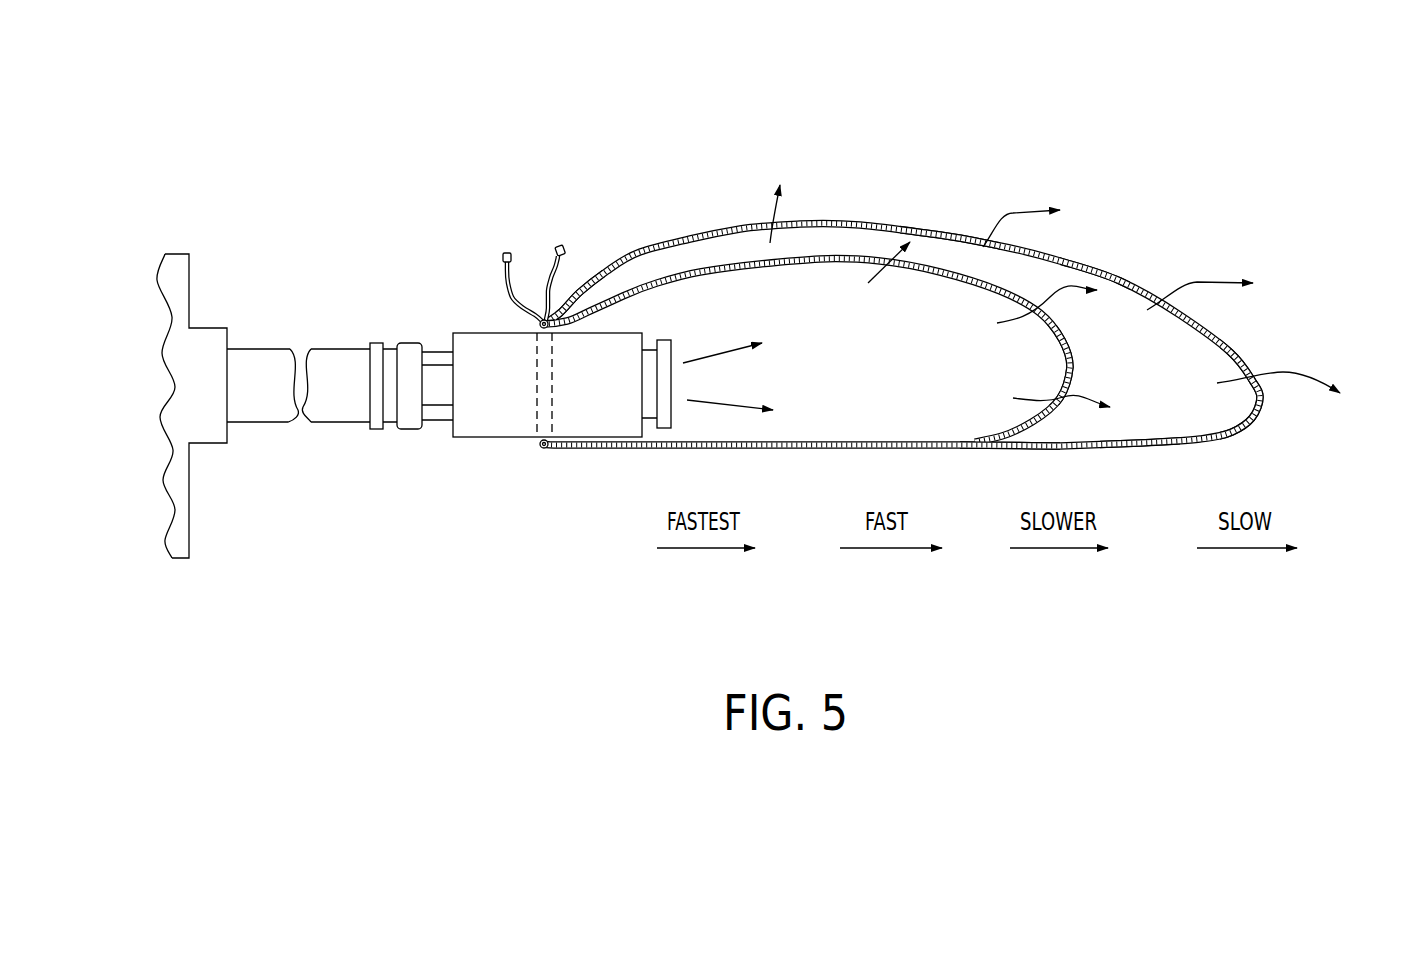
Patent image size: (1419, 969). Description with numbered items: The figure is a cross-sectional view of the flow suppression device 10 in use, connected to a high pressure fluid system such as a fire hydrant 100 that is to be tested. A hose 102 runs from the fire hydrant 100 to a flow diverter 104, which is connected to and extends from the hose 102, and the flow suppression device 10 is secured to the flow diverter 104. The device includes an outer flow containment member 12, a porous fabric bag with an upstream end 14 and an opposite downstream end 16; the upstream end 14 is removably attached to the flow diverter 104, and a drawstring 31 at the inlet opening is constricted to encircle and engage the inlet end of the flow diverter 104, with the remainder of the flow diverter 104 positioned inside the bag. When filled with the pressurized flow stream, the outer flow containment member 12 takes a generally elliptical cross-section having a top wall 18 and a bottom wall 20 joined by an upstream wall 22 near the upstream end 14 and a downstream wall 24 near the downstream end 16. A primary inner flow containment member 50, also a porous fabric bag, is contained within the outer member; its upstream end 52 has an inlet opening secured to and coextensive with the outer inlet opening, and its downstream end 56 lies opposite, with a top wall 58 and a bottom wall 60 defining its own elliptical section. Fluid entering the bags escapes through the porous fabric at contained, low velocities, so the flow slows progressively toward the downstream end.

The flow suppression device 10 is at (950, 153).
The outer flow containment member 12 is at (817, 220).
The upstream end 14 is at (586, 277).
The downstream end 16 is at (1250, 367).
The top wall 18 is at (1090, 263).
The bottom wall 20 is at (1137, 443).
The upstream wall 22 is at (572, 298).
The downstream wall 24 is at (1263, 407).
The drawstring 31 is at (507, 283).
The primary inner flow containment member 50 is at (703, 265).
The upstream end 52 is at (566, 323).
The downstream end 56 is at (1073, 357).
The top wall 58 is at (853, 293).
The bottom wall 60 is at (1007, 447).
The fire hydrant 100 is at (180, 253).
The hose 102 is at (262, 348).
The flow diverter 104 is at (498, 415).